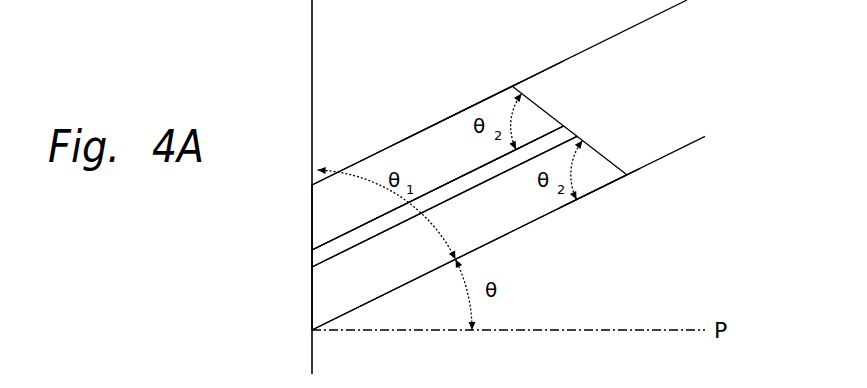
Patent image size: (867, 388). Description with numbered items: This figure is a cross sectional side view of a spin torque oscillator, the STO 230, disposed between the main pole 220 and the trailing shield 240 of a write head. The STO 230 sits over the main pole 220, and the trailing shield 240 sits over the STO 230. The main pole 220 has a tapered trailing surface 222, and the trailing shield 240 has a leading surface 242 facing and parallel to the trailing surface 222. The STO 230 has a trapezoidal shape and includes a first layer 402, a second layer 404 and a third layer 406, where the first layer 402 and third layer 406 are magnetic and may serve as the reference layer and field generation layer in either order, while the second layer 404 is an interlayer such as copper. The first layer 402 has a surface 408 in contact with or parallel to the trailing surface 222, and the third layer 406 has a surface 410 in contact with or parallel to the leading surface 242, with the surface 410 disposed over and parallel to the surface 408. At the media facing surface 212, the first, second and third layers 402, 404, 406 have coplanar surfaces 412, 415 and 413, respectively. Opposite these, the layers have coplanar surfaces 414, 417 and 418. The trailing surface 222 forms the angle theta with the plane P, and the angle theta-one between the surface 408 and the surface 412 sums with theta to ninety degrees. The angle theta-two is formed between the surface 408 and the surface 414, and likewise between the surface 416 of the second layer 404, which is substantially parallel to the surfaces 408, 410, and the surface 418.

The media facing surface 212 is at (311, 34).
The main pole 220 is at (657, 287).
The trailing surface 222 is at (588, 194).
The STO 230 is at (242, 202).
The trailing shield 240 is at (430, 47).
The leading surface 242 is at (658, 15).
The first layer 402 is at (312, 298).
The second layer 404 is at (306, 258).
The third layer 406 is at (312, 228).
The surface 408 is at (530, 222).
The surface 410 is at (423, 133).
The surface 412 is at (313, 285).
The surface 413 is at (313, 212).
The surface 414 is at (602, 152).
The surface 415 is at (313, 252).
The surface 416 is at (463, 176).
The surface 417 is at (570, 128).
The surface 418 is at (532, 100).